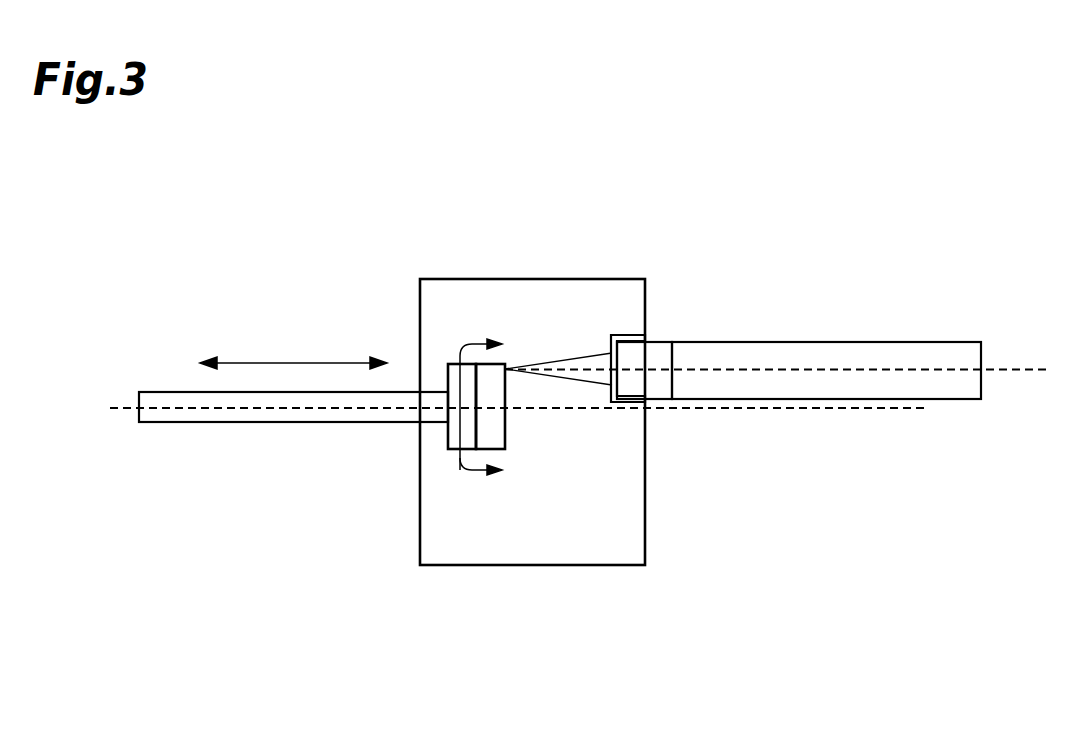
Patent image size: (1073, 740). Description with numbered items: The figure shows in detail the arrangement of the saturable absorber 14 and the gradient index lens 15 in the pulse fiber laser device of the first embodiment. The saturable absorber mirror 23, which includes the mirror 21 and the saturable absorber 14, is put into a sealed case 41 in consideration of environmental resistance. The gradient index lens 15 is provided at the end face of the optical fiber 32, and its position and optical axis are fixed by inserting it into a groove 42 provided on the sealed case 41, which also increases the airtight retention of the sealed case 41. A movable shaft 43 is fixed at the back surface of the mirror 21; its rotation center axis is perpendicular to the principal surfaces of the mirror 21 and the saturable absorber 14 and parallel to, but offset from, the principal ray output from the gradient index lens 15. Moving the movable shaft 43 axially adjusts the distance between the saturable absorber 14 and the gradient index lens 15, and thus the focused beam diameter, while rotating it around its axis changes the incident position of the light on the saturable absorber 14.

The sealed case 41 is at (532, 278).
The groove 42 is at (633, 333).
The movable shaft 43 is at (276, 416).
The saturable absorber 14 is at (497, 441).
The mirror 21 is at (454, 441).
The saturable absorber mirror 23 is at (492, 518).
The gradient index lens 15 is at (658, 382).
The optical fiber 32 is at (855, 386).